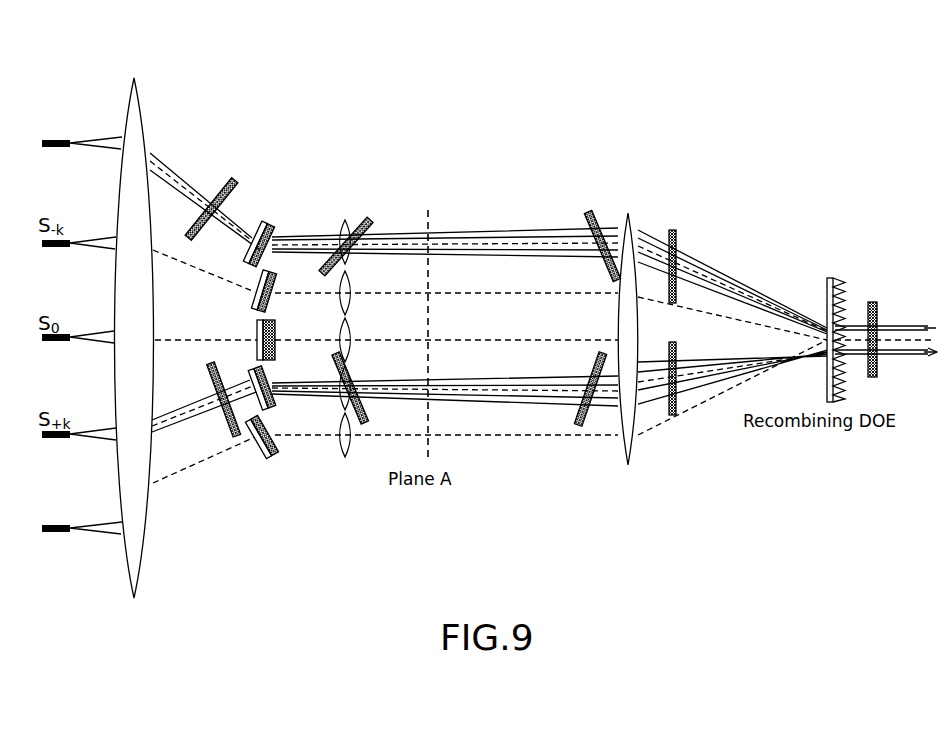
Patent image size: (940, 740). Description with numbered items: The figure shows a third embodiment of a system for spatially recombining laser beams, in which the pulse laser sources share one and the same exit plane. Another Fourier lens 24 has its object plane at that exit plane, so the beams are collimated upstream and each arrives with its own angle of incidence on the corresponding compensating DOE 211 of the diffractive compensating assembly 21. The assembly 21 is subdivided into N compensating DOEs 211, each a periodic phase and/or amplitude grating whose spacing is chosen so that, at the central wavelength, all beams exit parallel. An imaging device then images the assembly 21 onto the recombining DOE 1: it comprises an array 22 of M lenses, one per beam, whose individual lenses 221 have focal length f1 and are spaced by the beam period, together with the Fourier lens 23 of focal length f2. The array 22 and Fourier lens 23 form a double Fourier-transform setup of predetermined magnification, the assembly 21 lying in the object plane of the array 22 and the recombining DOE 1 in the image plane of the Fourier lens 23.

The recombining diffractive optical element 1 is at (832, 278).
The diffractive compensating assembly 21 is at (230, 364).
The compensating DOE 211 is at (256, 333).
The array of lenses 22 is at (374, 319).
The lenslets 221 is at (351, 332).
The Fourier lens 23 is at (628, 465).
The Fourier lens 24 is at (148, 545).